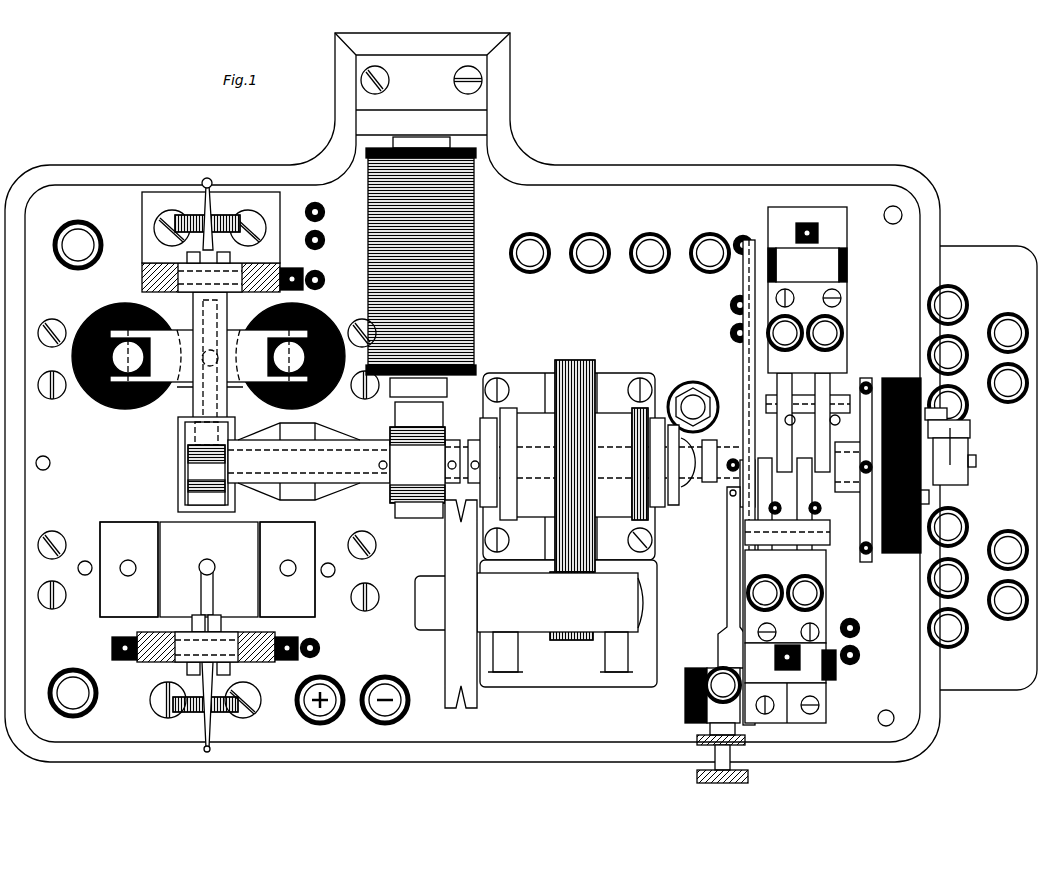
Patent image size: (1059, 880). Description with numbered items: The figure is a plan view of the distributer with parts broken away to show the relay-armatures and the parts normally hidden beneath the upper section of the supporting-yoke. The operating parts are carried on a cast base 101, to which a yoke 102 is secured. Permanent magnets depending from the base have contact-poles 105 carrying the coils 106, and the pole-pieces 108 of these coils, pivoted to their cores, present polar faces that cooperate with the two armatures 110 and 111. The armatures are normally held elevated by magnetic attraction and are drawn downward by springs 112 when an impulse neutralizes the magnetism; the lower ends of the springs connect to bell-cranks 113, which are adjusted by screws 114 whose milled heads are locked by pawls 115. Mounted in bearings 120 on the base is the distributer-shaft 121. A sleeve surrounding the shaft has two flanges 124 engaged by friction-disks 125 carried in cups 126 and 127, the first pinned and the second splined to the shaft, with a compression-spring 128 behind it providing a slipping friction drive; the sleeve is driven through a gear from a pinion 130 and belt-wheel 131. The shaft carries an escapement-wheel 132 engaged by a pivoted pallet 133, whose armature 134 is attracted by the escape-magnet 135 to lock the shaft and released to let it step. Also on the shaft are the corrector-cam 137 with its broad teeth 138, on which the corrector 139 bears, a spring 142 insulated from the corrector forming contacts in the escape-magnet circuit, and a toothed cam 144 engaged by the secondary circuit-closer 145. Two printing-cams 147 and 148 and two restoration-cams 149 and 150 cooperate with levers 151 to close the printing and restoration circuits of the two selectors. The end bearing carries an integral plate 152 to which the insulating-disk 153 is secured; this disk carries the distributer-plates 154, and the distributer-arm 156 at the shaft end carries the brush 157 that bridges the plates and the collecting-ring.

The cast base 101 is at (644, 164).
The yoke 102 is at (142, 270).
The contact-poles 105 is at (207, 569).
The coils 106 is at (140, 413).
The pole-pieces 108 is at (209, 356).
The armature 110 is at (210, 356).
The armature 111 is at (222, 630).
The springs 112 is at (208, 560).
The bell-cranks 113 is at (213, 584).
The screws 114 is at (190, 238).
The pawls 115 is at (213, 204).
The bearings 120 is at (549, 465).
The distributer-shaft 121 is at (452, 440).
The flanges 124 is at (517, 408).
The friction-disks 125 is at (501, 408).
The cup 126 is at (484, 416).
The cup 127 is at (735, 492).
The compression-spring 128 is at (740, 478).
The pinion 130 is at (594, 595).
The belt-wheel 131 is at (467, 597).
The escapement-wheel 132 is at (417, 465).
The pallet 133 is at (418, 518).
The armature 134 is at (399, 414).
The escape-magnet 135 is at (467, 298).
The corrector-cam 137 is at (730, 397).
The broad teeth 138 is at (714, 455).
The corrector 139 is at (750, 504).
The spring 142 is at (733, 556).
The cam 144 is at (745, 500).
The secondary circuit-closer 145 is at (743, 346).
The printing-cam 147 is at (779, 442).
The printing-cam 148 is at (818, 442).
The restoration-cam 149 is at (777, 507).
The restoration-cam 150 is at (821, 509).
The levers 151 is at (787, 384).
The plate 152 is at (870, 378).
The insulating-disk 153 is at (903, 554).
The distributer-plates 154 is at (929, 498).
The distributer-arm 156 is at (966, 442).
The brush 157 is at (947, 414).